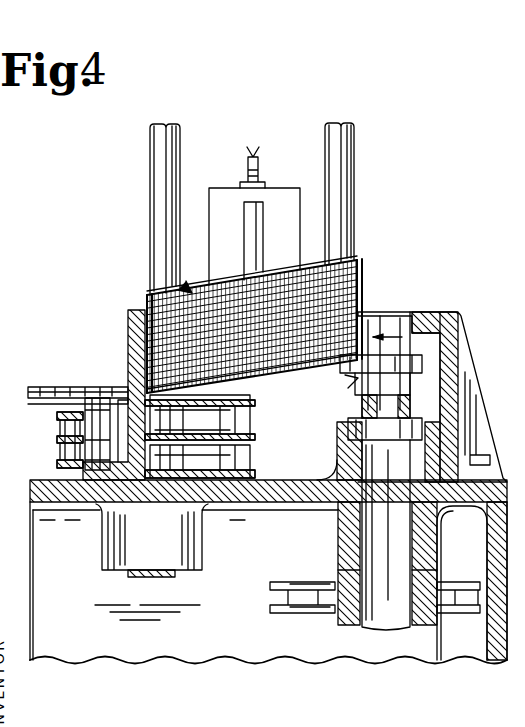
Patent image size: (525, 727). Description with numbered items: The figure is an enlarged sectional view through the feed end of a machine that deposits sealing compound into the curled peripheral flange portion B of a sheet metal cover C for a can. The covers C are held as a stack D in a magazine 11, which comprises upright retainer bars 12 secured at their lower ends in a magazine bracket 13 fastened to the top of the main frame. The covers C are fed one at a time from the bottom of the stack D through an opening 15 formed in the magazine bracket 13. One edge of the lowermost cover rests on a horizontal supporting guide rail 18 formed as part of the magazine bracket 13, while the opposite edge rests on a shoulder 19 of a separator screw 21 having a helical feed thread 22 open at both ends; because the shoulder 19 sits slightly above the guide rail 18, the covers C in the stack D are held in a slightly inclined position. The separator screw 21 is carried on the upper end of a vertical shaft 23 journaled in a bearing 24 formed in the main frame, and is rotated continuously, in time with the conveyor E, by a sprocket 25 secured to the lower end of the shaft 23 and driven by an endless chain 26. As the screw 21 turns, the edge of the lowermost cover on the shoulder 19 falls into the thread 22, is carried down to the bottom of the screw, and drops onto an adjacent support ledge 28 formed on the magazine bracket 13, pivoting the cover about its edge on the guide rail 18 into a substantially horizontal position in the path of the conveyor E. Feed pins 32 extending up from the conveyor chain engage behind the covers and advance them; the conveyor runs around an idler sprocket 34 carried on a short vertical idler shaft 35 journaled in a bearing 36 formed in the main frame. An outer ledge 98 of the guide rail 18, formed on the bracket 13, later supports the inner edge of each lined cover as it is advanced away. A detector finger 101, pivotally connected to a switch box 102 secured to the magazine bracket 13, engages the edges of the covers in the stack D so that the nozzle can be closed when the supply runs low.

The upright retainer bars 12 is at (162, 152).
The detector finger 101 is at (236, 212).
The switch box 102 is at (277, 200).
The curled peripheral flange portion B is at (350, 258).
The stack D is at (190, 290).
The cover C is at (312, 260).
The magazine 11 is at (128, 326).
The magazine bracket 13 is at (136, 346).
The shoulder 19 is at (418, 352).
The separator screw 21 is at (423, 366).
The support ledge 28 is at (355, 408).
The helical feed thread 22 is at (360, 376).
The vertical shaft 23 is at (347, 470).
The supporting guide rail 18 is at (225, 402).
The feed pins 32 is at (216, 394).
The opening 15 is at (278, 386).
The outer ledge 98 is at (85, 410).
The idler sprocket 34 is at (70, 436).
The conveyor E is at (58, 458).
The bearing 36 is at (152, 537).
The idler shaft 35 is at (152, 577).
The bearing 24 is at (352, 548).
The endless chain 26 is at (276, 615).
The sprocket 25 is at (342, 612).